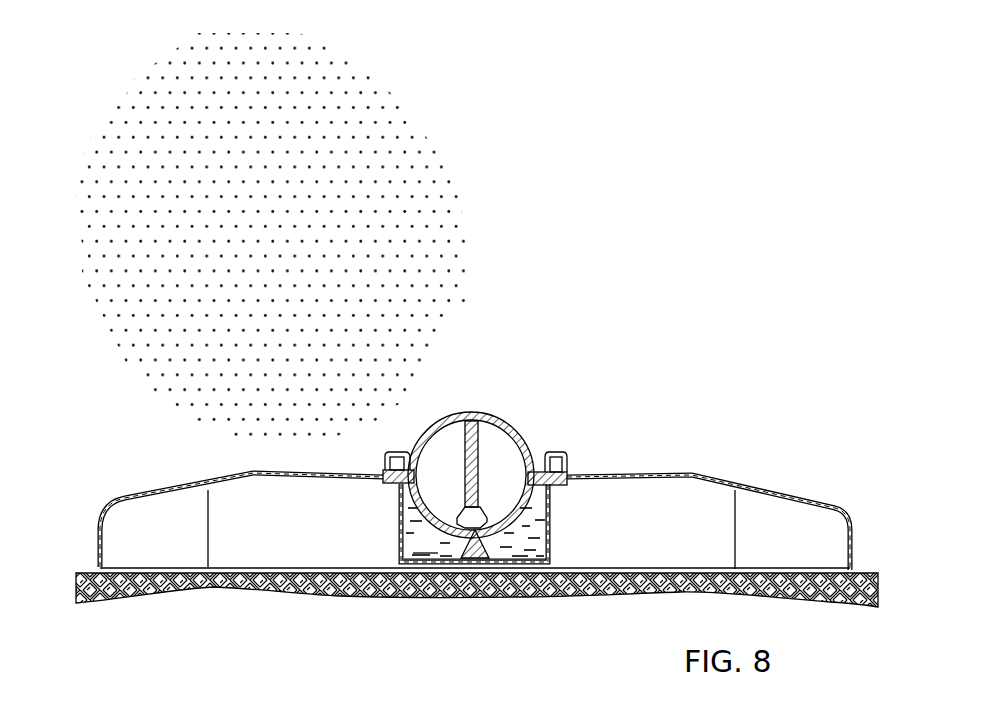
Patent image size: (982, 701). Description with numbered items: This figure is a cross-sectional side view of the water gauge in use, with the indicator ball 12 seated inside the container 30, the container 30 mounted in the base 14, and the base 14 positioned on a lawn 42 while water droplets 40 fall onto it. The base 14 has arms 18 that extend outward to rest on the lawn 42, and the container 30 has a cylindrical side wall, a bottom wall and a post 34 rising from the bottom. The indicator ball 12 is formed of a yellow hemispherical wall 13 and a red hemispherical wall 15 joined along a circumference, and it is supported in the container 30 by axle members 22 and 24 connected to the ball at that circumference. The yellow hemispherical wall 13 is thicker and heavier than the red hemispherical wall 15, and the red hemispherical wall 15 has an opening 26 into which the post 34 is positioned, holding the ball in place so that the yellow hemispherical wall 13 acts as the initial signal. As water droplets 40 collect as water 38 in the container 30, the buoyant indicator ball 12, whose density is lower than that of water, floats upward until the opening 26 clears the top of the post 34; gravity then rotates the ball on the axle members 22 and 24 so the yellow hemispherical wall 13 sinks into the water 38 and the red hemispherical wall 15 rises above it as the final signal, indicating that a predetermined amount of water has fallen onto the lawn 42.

The water droplets 40 is at (479, 202).
The indicator ball 12 is at (494, 420).
The yellow hemispherical wall 13 is at (523, 432).
The base 14 is at (565, 451).
The axle member 24 is at (568, 477).
The container 30 is at (547, 537).
The arms 18 is at (782, 498).
The lawn 42 is at (878, 607).
The axle member 22 is at (386, 470).
The water 38 is at (427, 542).
The red hemispherical wall 15 is at (398, 525).
The post 34 is at (450, 566).
The opening 26 is at (483, 510).